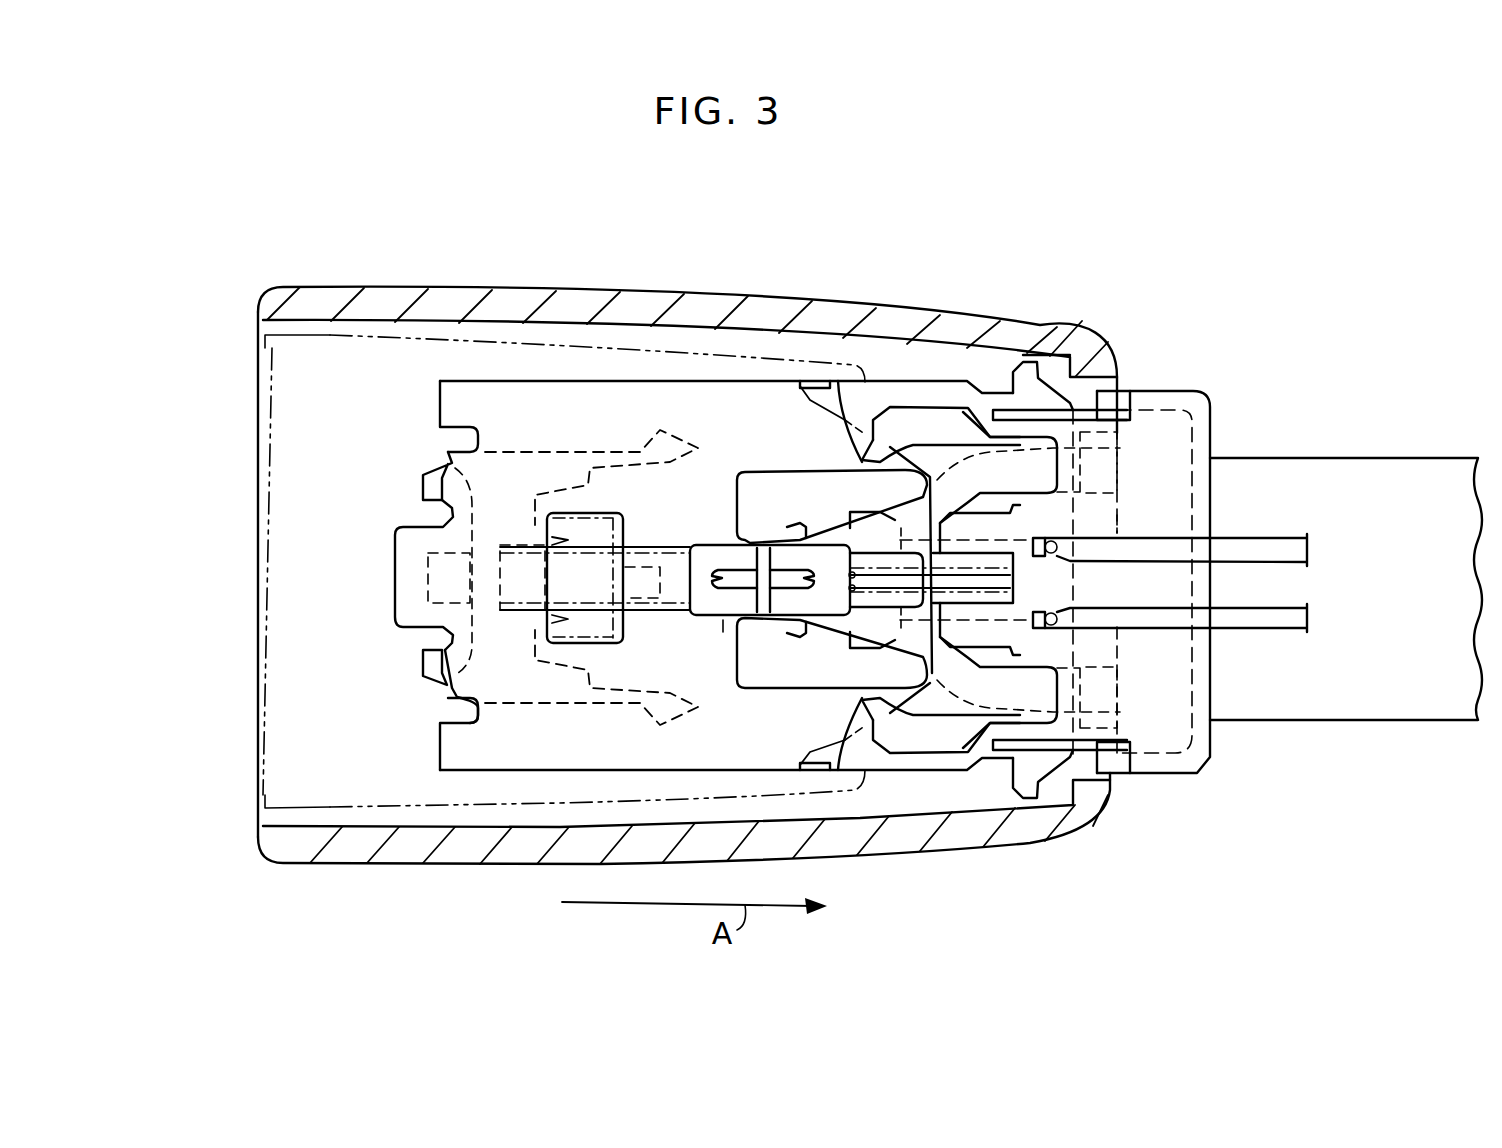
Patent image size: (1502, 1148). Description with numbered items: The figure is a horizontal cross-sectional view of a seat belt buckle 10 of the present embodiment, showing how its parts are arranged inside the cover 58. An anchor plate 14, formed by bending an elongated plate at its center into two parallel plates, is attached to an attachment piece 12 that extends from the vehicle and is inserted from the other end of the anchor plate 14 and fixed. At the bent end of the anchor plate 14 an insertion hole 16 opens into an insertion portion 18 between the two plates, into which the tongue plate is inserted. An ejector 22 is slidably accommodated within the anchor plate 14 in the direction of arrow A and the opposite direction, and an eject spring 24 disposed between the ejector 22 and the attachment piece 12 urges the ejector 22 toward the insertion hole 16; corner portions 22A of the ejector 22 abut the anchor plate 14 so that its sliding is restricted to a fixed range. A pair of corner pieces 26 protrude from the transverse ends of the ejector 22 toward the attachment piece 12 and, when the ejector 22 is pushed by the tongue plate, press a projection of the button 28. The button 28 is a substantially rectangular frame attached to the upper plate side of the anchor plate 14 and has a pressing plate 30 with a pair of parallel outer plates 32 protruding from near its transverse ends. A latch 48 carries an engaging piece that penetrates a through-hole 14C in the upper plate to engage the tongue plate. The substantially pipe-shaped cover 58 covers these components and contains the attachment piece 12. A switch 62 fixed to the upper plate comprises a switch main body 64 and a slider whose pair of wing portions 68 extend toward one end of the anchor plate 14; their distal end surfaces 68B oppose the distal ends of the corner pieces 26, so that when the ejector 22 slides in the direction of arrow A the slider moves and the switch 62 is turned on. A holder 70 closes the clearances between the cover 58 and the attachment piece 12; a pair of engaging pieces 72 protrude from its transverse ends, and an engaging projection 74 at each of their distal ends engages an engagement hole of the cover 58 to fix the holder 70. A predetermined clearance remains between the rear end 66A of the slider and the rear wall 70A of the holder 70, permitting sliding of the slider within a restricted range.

The buckle 10 is at (920, 183).
The attachment piece 12 is at (1400, 458).
The anchor plate 14 is at (930, 383).
The through-hole 14C is at (611, 638).
The insertion hole 16 is at (447, 690).
The insertion portion 18 is at (754, 763).
The ejector 22 is at (433, 466).
The corner portions 22A is at (450, 455).
The eject spring 24 is at (720, 616).
The corner pieces 26 is at (618, 452).
The button 28 is at (313, 330).
The pressing plate 30 is at (258, 565).
The outer plates 32 is at (497, 343).
The latch 48 is at (625, 548).
The cover 58 is at (665, 300).
The switch 62 is at (1033, 365).
The switch main body 64 is at (723, 623).
The rear end 66A is at (1117, 515).
The wing portions 68 is at (887, 410).
The distal end surfaces 68B is at (838, 381).
The holder 70 is at (1197, 393).
The rear wall 70A is at (1195, 732).
The engaging pieces 72 is at (1003, 385).
The engaging projection 74 is at (975, 418).